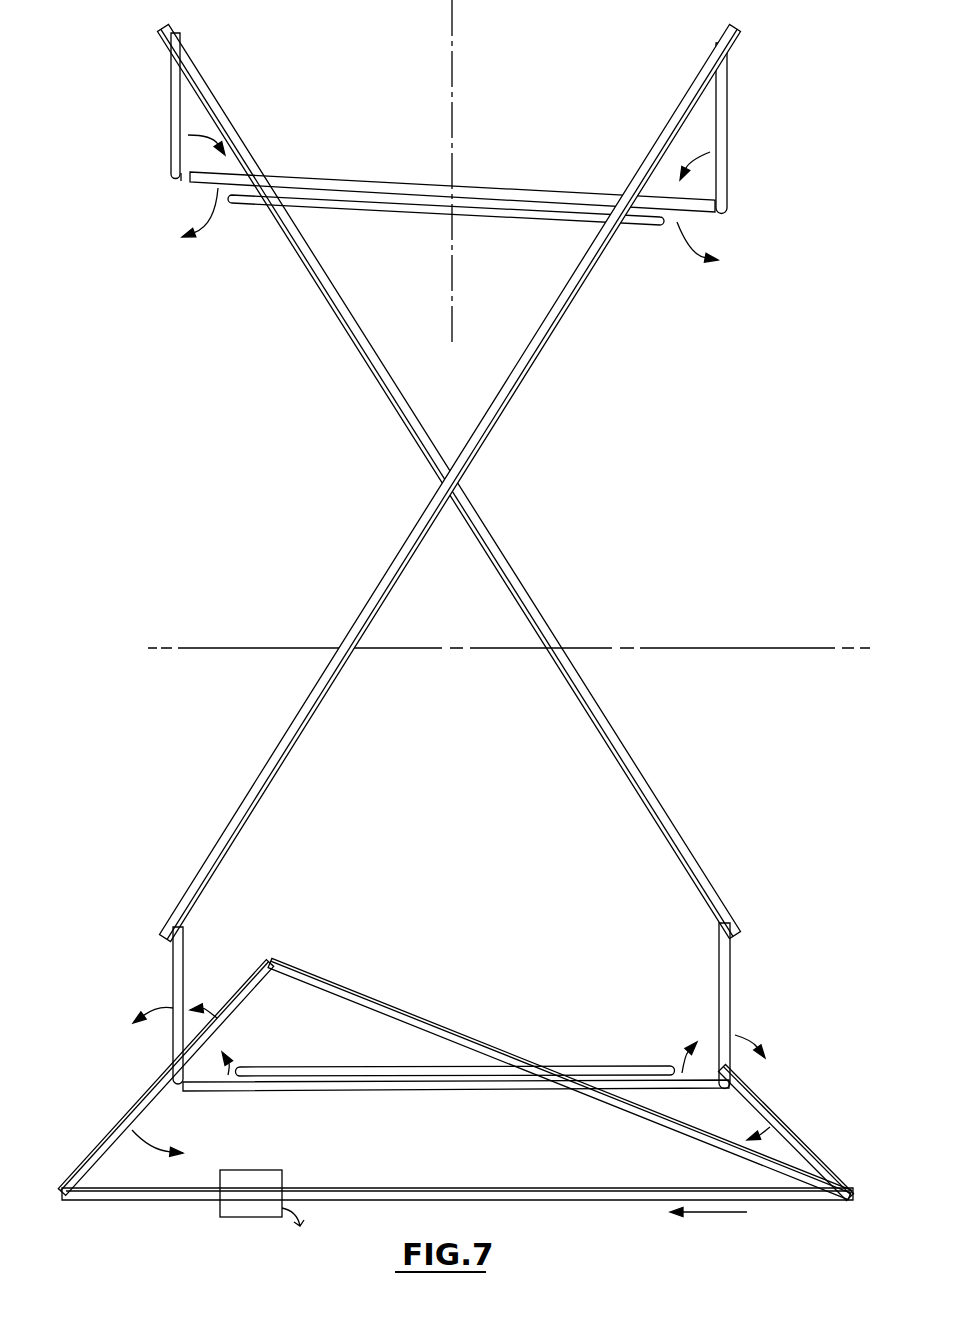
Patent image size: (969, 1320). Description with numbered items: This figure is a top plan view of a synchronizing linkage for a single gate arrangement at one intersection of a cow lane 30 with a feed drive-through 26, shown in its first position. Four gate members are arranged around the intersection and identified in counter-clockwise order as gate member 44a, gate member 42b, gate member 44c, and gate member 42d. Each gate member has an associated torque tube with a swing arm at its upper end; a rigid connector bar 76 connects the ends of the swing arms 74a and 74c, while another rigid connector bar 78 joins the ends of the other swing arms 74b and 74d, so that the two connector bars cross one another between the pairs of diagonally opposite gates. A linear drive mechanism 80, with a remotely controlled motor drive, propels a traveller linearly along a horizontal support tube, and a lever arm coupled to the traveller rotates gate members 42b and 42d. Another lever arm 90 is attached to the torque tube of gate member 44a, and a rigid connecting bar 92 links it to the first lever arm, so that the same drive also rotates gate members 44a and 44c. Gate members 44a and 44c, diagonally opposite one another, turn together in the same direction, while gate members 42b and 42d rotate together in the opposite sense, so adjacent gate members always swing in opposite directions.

The cow lane 30 is at (448, 102).
The feed drive-through 26 is at (240, 647).
The swing arm 74a is at (173, 970).
The swing arm 74b is at (731, 1013).
The swing arm 74c is at (728, 122).
The swing arm 74d is at (171, 147).
The gate member 42b is at (330, 1067).
The gate member 42d is at (197, 185).
The gate member 44a is at (247, 1090).
The gate member 44c is at (690, 218).
The connector bar 76 is at (283, 767).
The connector bar 78 is at (693, 855).
The lever arm 90 is at (255, 1002).
The connecting bar 92 is at (510, 1052).
The linear drive mechanism 80 is at (336, 1166).